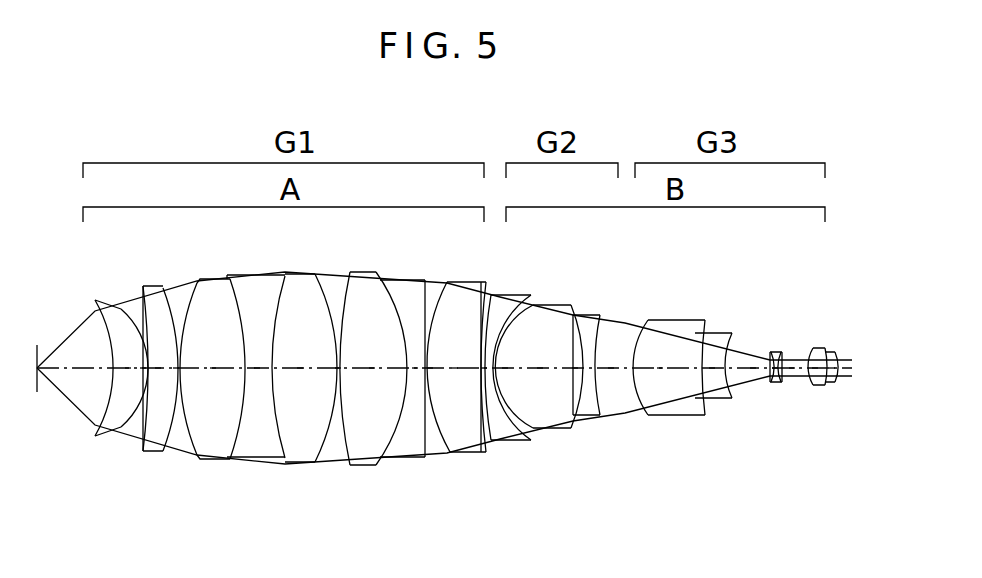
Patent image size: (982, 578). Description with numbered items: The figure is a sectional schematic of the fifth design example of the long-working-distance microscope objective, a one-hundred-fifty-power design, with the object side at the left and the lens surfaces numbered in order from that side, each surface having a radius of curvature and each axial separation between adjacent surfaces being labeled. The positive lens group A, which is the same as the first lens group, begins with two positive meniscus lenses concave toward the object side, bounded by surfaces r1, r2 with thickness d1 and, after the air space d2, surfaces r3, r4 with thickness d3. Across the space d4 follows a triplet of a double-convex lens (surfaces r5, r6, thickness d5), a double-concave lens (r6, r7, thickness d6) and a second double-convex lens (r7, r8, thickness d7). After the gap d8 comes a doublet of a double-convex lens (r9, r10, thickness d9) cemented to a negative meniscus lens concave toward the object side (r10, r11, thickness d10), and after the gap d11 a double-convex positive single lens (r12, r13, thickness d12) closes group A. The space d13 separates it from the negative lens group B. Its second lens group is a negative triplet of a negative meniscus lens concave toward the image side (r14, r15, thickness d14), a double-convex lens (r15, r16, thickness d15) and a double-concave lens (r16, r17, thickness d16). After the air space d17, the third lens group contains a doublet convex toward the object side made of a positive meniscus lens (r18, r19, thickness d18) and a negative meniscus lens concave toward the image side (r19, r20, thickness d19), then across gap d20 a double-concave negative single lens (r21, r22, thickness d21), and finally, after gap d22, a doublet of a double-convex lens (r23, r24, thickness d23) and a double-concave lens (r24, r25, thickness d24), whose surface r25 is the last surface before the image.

The radius of curvature of first lens surface r1 is at (101, 325).
The radius of curvature of second lens surface r2 is at (120, 308).
The radius of curvature of third lens surface r3 is at (143, 288).
The radius of curvature of fourth lens surface r4 is at (164, 288).
The radius of curvature of fifth lens surface r5 is at (197, 283).
The radius of curvature of sixth lens surface r6 is at (232, 280).
The radius of curvature of seventh lens surface r7 is at (283, 277).
The radius of curvature of eighth lens surface r8 is at (318, 275).
The radius of curvature of ninth lens surface r9 is at (349, 274).
The radius of curvature of tenth lens surface r10 is at (381, 278).
The radius of curvature of eleventh lens surface r11 is at (425, 281).
The radius of curvature of twelfth lens surface r12 is at (449, 283).
The radius of curvature of thirteenth lens surface r13 is at (486, 285).
The radius of curvature of fourteenth lens surface r14 is at (528, 297).
The radius of curvature of fifteenth lens surface r15 is at (531, 306).
The radius of curvature of sixteenth lens surface r16 is at (574, 316).
The radius of curvature of seventeenth lens surface r17 is at (600, 317).
The radius of curvature of eighteenth lens surface r18 is at (647, 321).
The radius of curvature of nineteenth lens surface r19 is at (704, 321).
The radius of curvature of twentieth lens surface r20 is at (732, 340).
The radius of curvature of twenty-first lens surface r21 is at (771, 353).
The radius of curvature of twenty-second lens surface r22 is at (782, 352).
The radius of curvature of twenty-third lens surface r23 is at (812, 348).
The radius of curvature of twenty-fourth lens surface r24 is at (826, 350).
The radius of curvature of twenty-fifth lens surface r25 is at (837, 352).
The separation between first and second lens surfaces d1 is at (128, 372).
The separation between second and third lens surfaces d2 is at (143, 372).
The separation between third and fourth lens surfaces d3 is at (158, 372).
The separation between fourth and fifth lens surfaces d4 is at (176, 372).
The separation between fifth and sixth lens surfaces d5 is at (213, 372).
The separation between sixth and seventh lens surfaces d6 is at (257, 372).
The separation between seventh and eighth lens surfaces d7 is at (300, 372).
The separation between eighth and ninth lens surfaces d8 is at (338, 372).
The separation between ninth and tenth lens surfaces d9 is at (372, 372).
The separation between tenth and eleventh lens surfaces d10 is at (415, 372).
The separation between eleventh and twelfth lens surfaces d11 is at (430, 372).
The separation between twelfth and thirteenth lens surfaces d12 is at (455, 372).
The separation between thirteenth and fourteenth lens surfaces d13 is at (484, 372).
The separation between fourteenth and fifteenth lens surfaces d14 is at (505, 372).
The separation between fifteenth and sixteenth lens surfaces d15 is at (540, 372).
The separation between sixteenth and seventeenth lens surfaces d16 is at (575, 372).
The separation between seventeenth and eighteenth lens surfaces d17 is at (611, 372).
The separation between eighteenth and nineteenth lens surfaces d18 is at (660, 372).
The separation between nineteenth and twentieth lens surfaces d19 is at (712, 372).
The separation between twentieth and twenty-first lens surfaces d20 is at (753, 372).
The separation between twenty-first and twenty-second lens surfaces d21 is at (775, 372).
The separation between twenty-second and twenty-third lens surfaces d22 is at (792, 372).
The separation between twenty-third and twenty-fourth lens surfaces d23 is at (815, 372).
The separation between twenty-fourth and twenty-fifth lens surfaces d24 is at (832, 372).